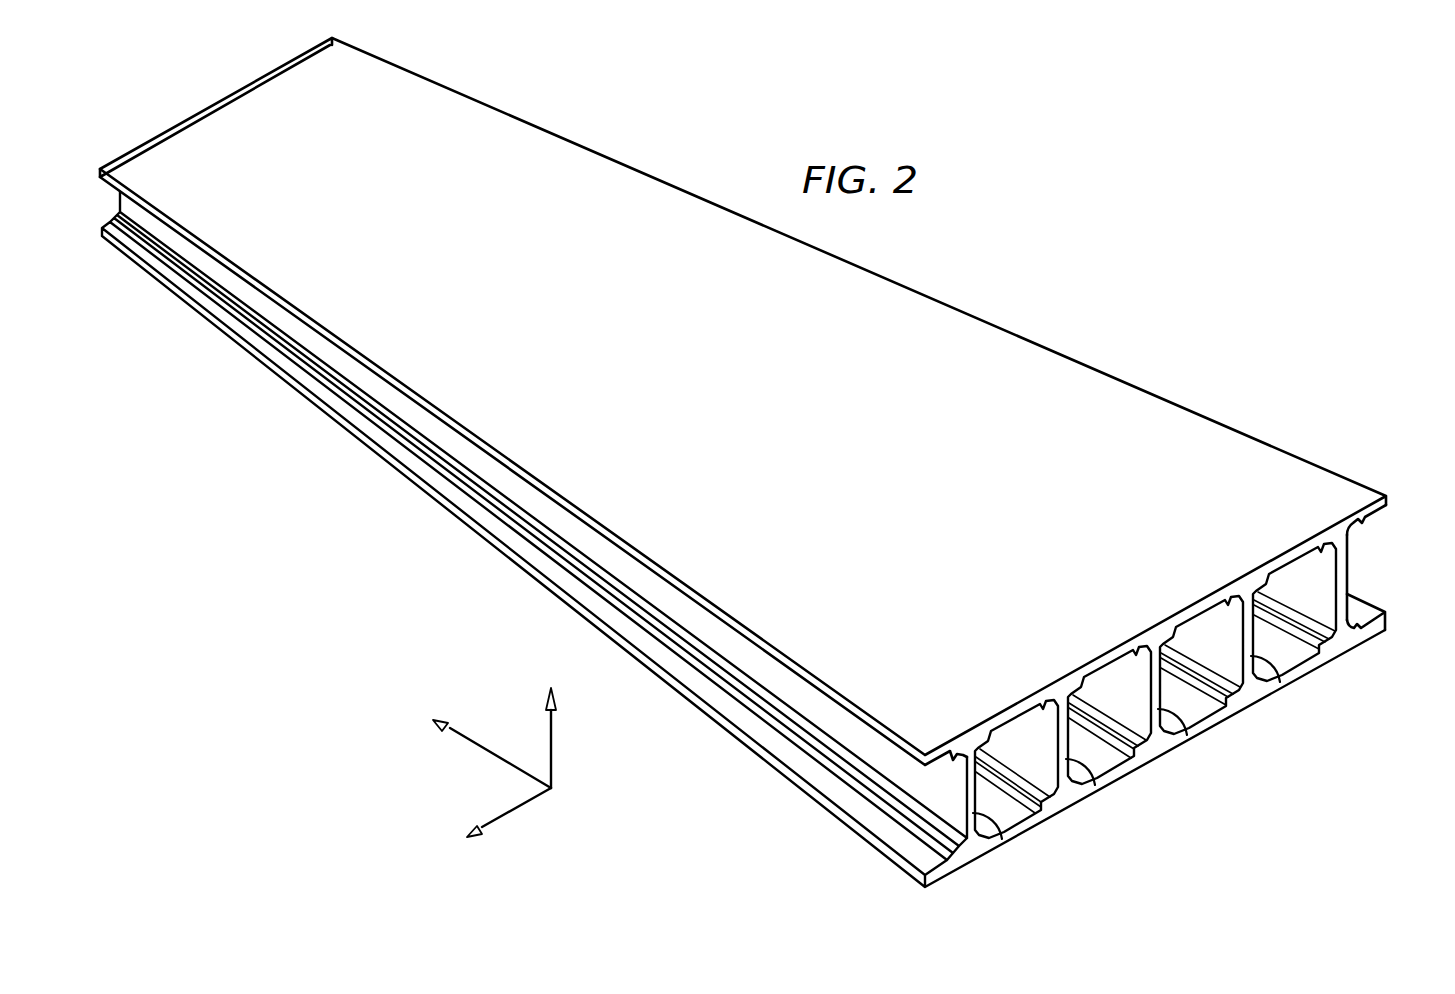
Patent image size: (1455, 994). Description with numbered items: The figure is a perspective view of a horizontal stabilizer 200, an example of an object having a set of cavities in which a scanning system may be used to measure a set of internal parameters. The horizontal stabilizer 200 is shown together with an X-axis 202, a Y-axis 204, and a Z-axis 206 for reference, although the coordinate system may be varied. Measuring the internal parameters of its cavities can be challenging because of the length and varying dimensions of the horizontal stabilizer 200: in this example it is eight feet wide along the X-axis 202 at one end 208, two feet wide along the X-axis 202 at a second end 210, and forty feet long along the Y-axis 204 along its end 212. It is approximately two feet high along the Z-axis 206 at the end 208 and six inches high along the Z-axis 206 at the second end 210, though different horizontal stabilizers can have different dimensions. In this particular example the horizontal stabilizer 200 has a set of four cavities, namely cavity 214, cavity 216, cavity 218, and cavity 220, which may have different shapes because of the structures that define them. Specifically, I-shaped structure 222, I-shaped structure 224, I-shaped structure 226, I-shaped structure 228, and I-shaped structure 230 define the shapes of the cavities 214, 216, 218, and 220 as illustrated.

The horizontal stabilizer 200 is at (1059, 317).
The X-axis 202 is at (515, 810).
The Y-axis 204 is at (472, 747).
The Z-axis 206 is at (552, 732).
The end 208 is at (1307, 790).
The second end 210 is at (197, 87).
The end 212 is at (1368, 547).
The cavity 214 is at (1003, 808).
The cavity 216 is at (1093, 757).
The cavity 218 is at (1185, 705).
The cavity 220 is at (1277, 652).
The I-shaped structure 222 is at (1001, 840).
The I-shaped structure 224 is at (1094, 785).
The I-shaped structure 226 is at (1187, 736).
The I-shaped structure 228 is at (1280, 683).
The I-shaped structure 230 is at (1340, 583).